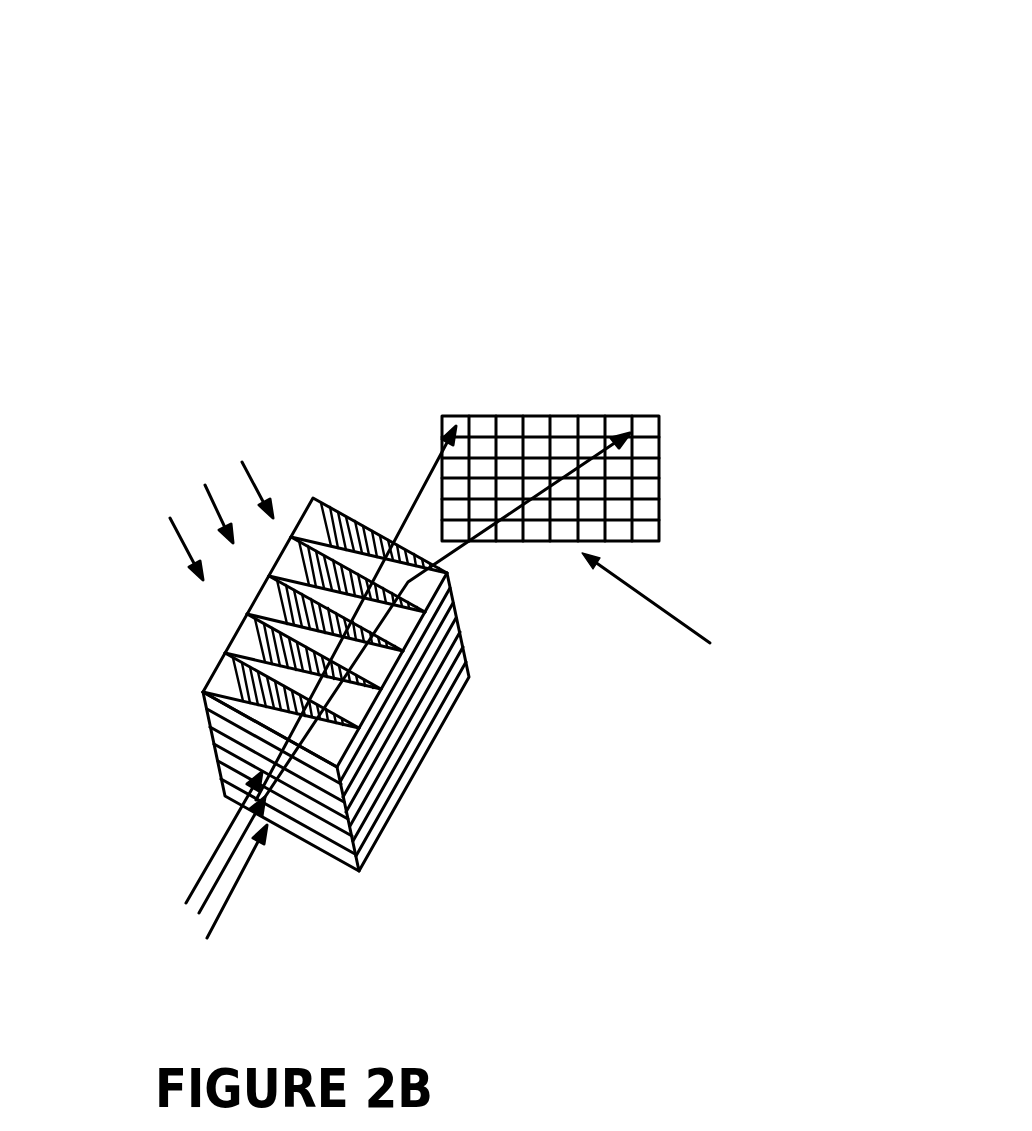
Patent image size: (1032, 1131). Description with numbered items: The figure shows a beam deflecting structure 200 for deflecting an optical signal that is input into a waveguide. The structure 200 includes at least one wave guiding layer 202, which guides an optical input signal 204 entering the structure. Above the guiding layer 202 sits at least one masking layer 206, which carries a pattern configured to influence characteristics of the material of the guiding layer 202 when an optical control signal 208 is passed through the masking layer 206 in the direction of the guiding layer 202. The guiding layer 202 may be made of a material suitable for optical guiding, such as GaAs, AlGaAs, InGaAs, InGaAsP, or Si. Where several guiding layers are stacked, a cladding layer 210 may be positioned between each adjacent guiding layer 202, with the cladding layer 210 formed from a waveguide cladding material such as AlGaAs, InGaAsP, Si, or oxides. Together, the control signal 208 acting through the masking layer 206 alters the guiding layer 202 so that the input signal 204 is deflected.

The beam deflecting structure 200 is at (780, 115).
The wave guiding layer 202 is at (207, 727).
The optical input signal 204 is at (137, 852).
The masking layer 206 is at (217, 663).
The optical control signal 208 is at (266, 377).
The cladding layer 210 is at (207, 707).